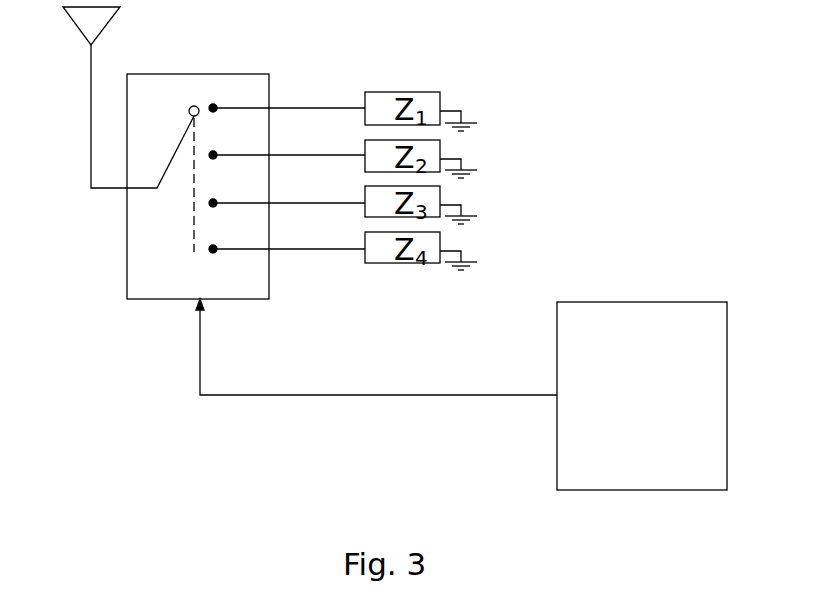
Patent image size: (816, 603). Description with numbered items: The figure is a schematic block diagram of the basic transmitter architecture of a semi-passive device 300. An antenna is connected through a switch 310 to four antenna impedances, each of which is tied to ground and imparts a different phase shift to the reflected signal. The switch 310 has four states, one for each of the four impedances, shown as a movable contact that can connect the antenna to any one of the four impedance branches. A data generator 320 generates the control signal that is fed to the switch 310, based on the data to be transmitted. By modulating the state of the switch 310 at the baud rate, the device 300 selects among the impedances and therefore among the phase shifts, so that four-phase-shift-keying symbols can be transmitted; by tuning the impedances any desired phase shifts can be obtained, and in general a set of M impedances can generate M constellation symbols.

The semi-passive device 300 is at (274, 437).
The switch 310 is at (148, 290).
The data generator 320 is at (602, 347).